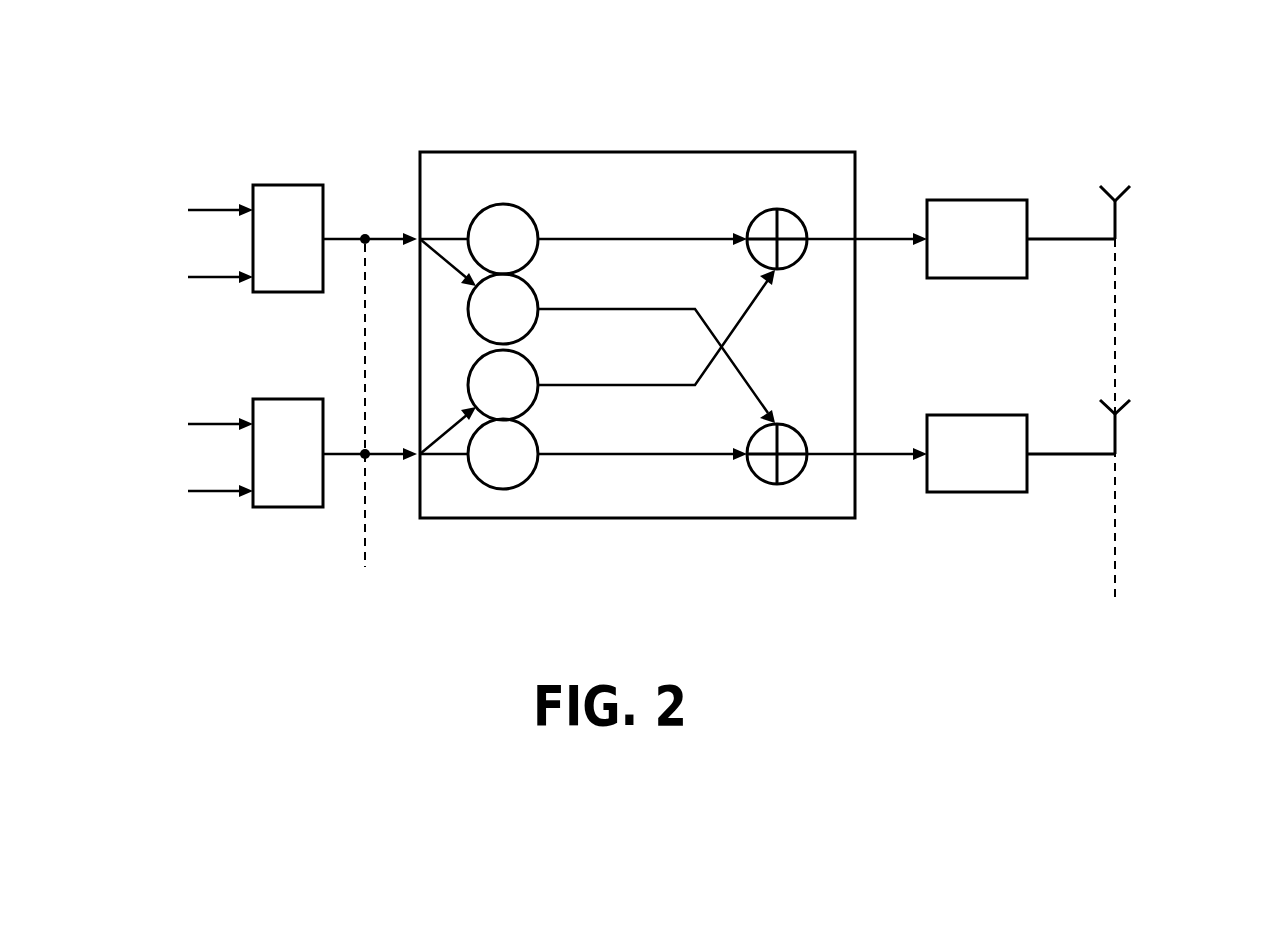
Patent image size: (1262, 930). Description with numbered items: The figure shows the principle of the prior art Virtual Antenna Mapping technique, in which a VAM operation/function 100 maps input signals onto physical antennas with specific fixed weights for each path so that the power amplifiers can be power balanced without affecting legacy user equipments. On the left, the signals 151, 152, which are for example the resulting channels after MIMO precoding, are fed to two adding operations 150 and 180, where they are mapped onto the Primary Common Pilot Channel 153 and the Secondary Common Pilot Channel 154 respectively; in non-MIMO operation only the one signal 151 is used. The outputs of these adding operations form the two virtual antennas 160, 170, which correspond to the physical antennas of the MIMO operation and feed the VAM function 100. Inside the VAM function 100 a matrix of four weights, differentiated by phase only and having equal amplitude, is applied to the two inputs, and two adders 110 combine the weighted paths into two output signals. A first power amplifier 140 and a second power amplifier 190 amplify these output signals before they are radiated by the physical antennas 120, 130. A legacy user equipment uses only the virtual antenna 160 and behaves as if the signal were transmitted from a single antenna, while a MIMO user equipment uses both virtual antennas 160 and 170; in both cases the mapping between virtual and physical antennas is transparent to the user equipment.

The VAM operation/function 100 is at (690, 160).
The adders 110 is at (876, 346).
The physical antenna 120 is at (1115, 230).
The physical antenna 130 is at (1115, 435).
The first power amplifier 140 is at (978, 213).
The adding operation 150 is at (289, 205).
The signal 151 is at (213, 207).
The signal 152 is at (212, 422).
The Primary Common Pilot Channel (P-CPICH) 153 is at (210, 279).
The Secondary Common Pilot Channel (S-CPICH) 154 is at (212, 493).
The virtual antenna 160 is at (347, 237).
The virtual antenna 170 is at (340, 457).
The adding operation 180 is at (280, 493).
The second power amplifier 190 is at (977, 472).